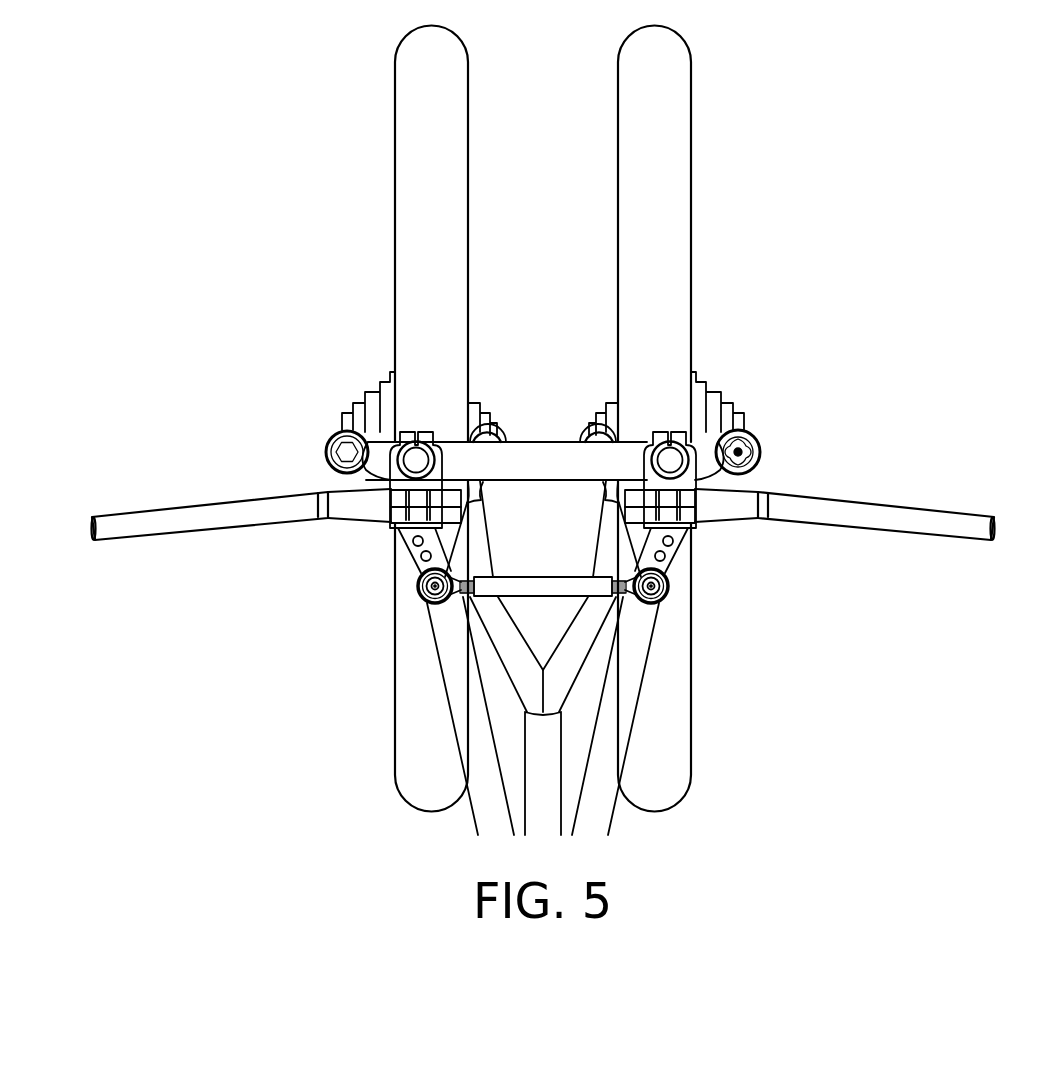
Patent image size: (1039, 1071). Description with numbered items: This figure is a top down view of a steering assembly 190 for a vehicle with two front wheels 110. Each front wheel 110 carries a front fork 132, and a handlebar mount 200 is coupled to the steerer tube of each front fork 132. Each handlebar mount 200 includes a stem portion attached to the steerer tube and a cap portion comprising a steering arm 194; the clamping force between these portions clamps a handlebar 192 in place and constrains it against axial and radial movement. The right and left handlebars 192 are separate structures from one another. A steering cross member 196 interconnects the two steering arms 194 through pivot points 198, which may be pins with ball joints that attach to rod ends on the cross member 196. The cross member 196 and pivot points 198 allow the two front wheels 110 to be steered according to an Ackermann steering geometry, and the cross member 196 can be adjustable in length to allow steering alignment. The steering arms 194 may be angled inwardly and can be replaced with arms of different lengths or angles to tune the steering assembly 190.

The front wheels 110 is at (412, 150).
The front fork 132 is at (332, 437).
The steering assembly 190 is at (729, 585).
The handlebars 192 is at (198, 506).
The steering arms 194 is at (415, 555).
The steering cross member 196 is at (553, 576).
The pivot points 198 is at (423, 597).
The handlebar mounts 200 is at (408, 438).